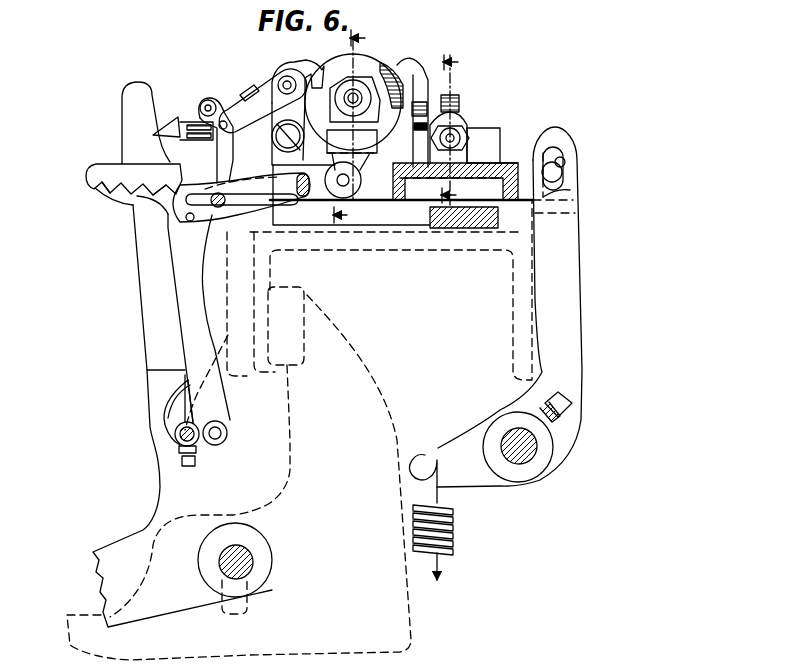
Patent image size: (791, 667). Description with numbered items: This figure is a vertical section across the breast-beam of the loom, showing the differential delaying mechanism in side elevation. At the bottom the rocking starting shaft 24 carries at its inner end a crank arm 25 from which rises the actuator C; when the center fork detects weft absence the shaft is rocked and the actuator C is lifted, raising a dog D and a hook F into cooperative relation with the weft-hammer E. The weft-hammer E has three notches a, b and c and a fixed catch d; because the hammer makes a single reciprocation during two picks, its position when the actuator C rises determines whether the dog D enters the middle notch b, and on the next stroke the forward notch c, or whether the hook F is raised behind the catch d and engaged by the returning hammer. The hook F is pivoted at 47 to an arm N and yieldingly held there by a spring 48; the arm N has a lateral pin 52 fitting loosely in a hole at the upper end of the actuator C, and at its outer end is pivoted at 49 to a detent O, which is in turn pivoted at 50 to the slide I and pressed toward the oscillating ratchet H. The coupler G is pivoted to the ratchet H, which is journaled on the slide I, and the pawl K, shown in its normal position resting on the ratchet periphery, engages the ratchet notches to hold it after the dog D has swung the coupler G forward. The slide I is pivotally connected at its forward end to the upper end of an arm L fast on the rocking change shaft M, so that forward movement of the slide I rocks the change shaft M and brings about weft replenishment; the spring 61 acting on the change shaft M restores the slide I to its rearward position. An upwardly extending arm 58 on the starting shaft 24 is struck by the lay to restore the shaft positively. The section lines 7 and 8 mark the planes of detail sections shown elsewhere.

The rear notch a is at (108, 188).
The middle notch b is at (127, 187).
The forward notch c is at (162, 175).
The fixed catch d is at (143, 87).
The dog D is at (158, 216).
The weft-hammer E is at (150, 283).
The actuator C is at (195, 328).
The hook F is at (170, 118).
The coupler G is at (302, 196).
The oscillating ratchet H is at (375, 73).
The slide I is at (528, 170).
The pawl K is at (428, 77).
The arm L is at (560, 270).
The change shaft M is at (520, 458).
The arm N is at (262, 84).
The detent O is at (303, 116).
The section line 7— 7 is at (465, 122).
The section line 8— 8 is at (358, 128).
The rocking shaft 24 is at (176, 440).
The crank arm 25 is at (207, 444).
The pivot 47 is at (207, 101).
The spring 48 is at (196, 152).
The pivot 49 is at (285, 77).
The pivot 50 is at (276, 146).
The lateral pin 52 is at (222, 121).
The arm 58 is at (180, 404).
The spring 61 is at (447, 545).